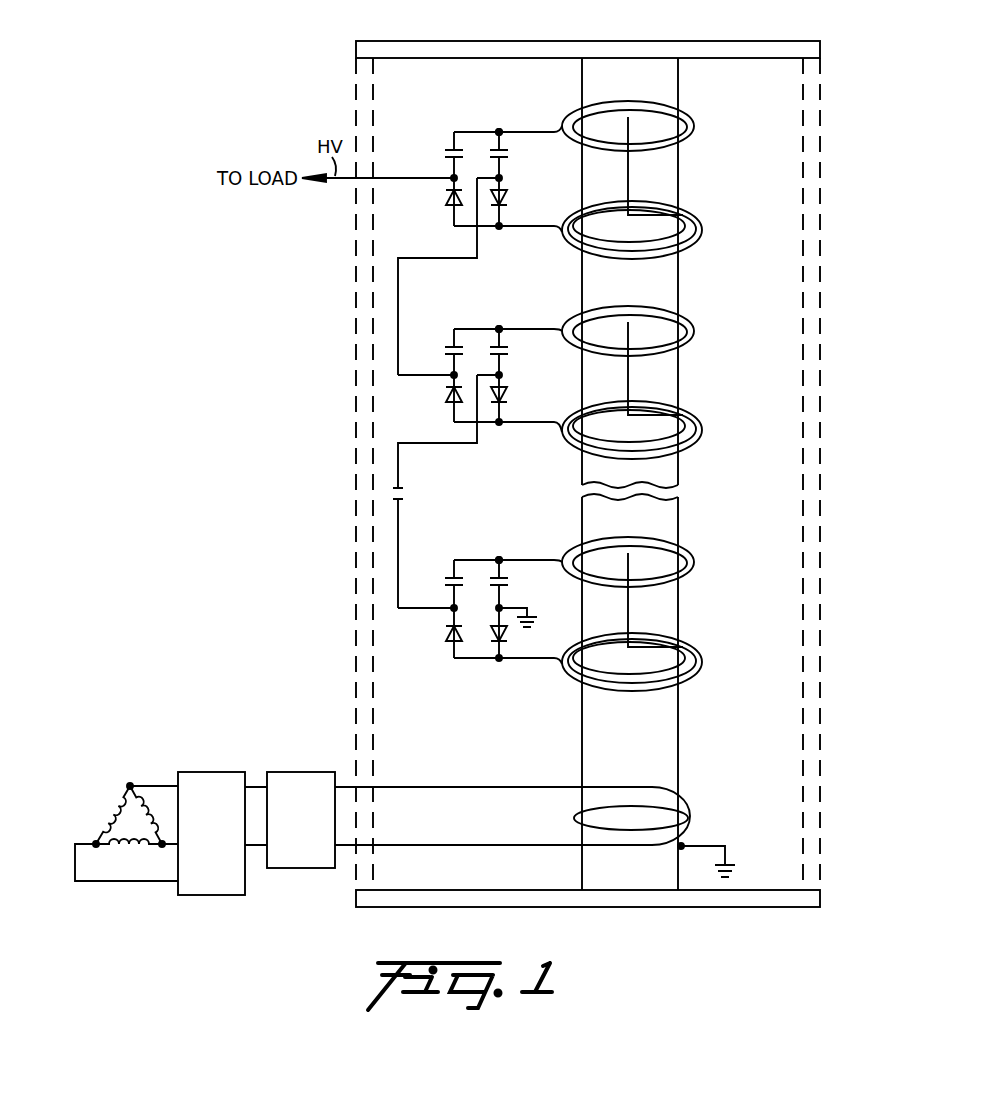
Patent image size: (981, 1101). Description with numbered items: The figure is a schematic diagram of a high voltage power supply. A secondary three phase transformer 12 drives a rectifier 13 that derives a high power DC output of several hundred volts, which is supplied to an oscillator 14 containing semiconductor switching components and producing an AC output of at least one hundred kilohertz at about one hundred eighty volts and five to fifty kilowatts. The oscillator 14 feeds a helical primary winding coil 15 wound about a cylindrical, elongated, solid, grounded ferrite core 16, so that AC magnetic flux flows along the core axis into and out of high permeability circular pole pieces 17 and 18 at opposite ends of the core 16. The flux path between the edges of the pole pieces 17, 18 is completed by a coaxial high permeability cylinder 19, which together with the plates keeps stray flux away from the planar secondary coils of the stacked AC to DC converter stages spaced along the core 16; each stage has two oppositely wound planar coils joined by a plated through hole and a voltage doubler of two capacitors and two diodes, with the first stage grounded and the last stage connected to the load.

The secondary three phase transformer 12 is at (125, 808).
The rectifier 13 is at (208, 778).
The oscillator 14 is at (300, 778).
The helical primary winding coil 15 is at (690, 817).
The ferrite core 16 is at (680, 735).
The circular pole piece 17 is at (743, 41).
The circular pole piece 18 is at (770, 907).
The high magnetic permeability cylinder 19 is at (818, 134).